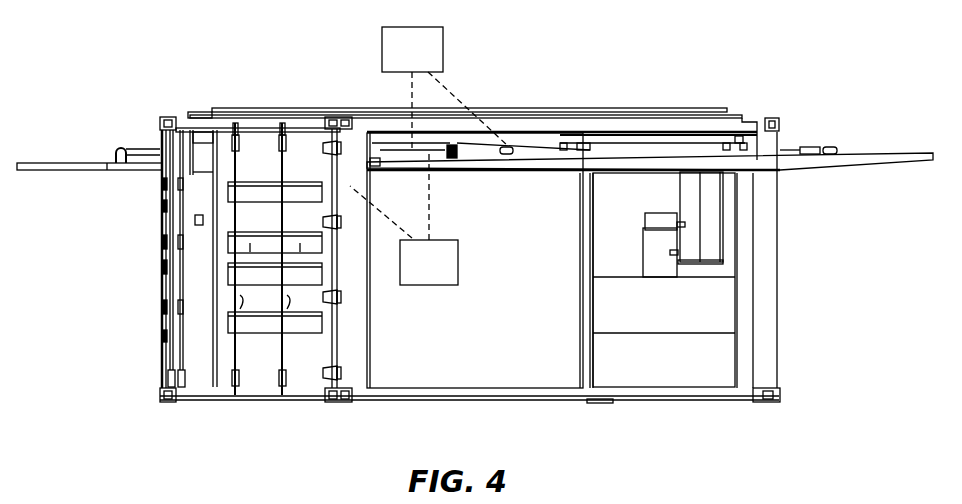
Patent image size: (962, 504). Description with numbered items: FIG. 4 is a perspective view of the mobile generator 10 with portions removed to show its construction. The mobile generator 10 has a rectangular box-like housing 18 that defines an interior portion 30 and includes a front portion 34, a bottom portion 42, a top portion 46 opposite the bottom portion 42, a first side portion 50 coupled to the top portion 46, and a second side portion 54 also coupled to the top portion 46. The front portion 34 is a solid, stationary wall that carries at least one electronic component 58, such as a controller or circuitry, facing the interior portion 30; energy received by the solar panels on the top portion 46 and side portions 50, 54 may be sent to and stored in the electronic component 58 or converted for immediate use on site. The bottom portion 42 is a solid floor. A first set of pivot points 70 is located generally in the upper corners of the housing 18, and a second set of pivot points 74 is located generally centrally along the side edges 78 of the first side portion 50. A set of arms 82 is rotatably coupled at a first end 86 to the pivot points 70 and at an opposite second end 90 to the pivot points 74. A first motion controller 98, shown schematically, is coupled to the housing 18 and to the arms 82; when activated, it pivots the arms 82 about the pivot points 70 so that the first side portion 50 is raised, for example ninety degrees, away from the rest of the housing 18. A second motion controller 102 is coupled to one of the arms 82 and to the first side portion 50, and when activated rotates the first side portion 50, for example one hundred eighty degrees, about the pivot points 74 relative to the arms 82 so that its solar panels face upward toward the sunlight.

The mobile generator 10 is at (152, 66).
The housing 18 is at (138, 320).
The interior portion 30 is at (398, 364).
The front portion 34 is at (780, 208).
The bottom portion 42 is at (532, 394).
The top portion 46 is at (570, 102).
The first side portion 50 is at (888, 144).
The second side portion 54 is at (59, 156).
The electronic component 58 is at (688, 238).
The first set of pivot points 70 is at (657, 257).
The second set of pivot points 74 is at (837, 150).
The side edges 78 is at (505, 155).
The arms 82 is at (394, 140).
The first end 86 is at (370, 163).
The second end 90 is at (820, 150).
The first motion controller 98 is at (441, 274).
The second motion controller 102 is at (431, 62).